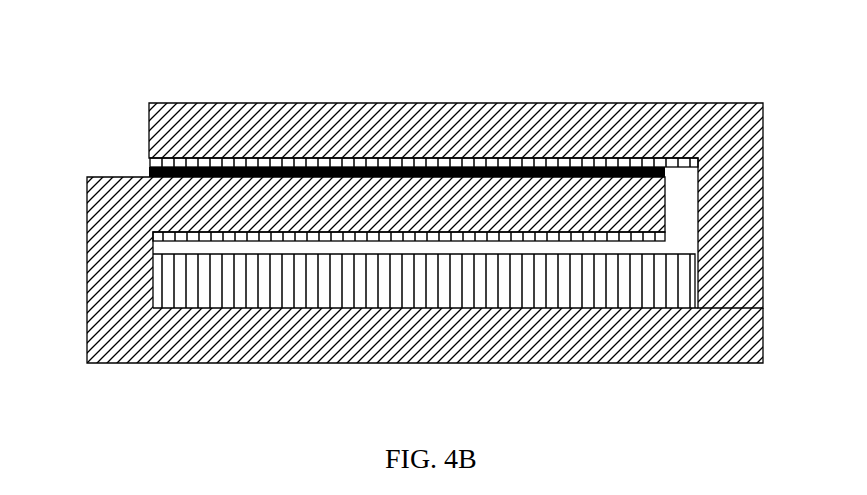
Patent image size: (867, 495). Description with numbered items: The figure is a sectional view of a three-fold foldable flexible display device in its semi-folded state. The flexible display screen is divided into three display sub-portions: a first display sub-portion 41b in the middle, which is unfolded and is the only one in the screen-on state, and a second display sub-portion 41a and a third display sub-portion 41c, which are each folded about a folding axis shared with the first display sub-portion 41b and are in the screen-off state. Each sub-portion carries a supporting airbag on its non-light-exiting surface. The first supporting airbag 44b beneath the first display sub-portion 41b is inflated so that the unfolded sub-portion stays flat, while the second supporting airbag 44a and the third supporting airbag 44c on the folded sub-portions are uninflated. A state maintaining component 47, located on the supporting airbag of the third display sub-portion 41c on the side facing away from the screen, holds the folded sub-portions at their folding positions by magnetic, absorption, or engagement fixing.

The second display sub-portion 41a is at (165, 217).
The first display sub-portion 41b is at (342, 340).
The third display sub-portion 41c is at (588, 101).
The second supporting airbag 44a is at (660, 237).
The first supporting airbag 44b is at (552, 287).
The third supporting airbag 44c is at (698, 164).
The state maintaining component 47 is at (149, 170).